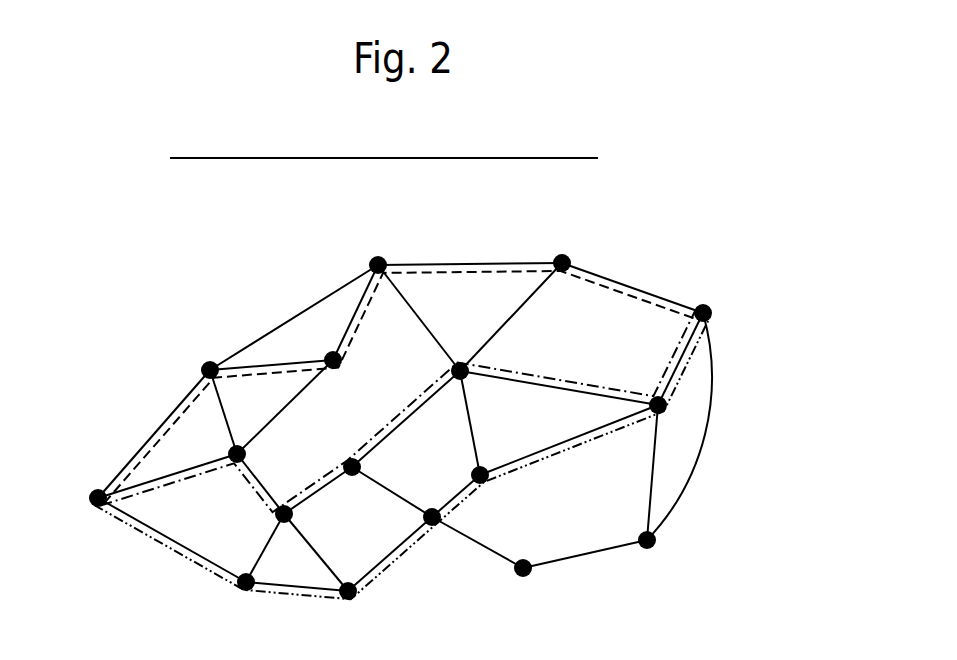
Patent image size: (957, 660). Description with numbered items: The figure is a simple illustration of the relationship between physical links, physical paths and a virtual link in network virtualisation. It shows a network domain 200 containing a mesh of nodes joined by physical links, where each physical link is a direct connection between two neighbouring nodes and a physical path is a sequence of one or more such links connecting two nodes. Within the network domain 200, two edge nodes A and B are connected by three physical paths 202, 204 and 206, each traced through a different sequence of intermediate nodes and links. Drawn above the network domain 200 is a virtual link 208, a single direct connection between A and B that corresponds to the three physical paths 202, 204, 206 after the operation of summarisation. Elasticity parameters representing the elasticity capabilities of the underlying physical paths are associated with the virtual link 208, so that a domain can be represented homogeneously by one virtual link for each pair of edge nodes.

The network domain 200 is at (399, 418).
The physical path 202 is at (449, 272).
The physical path 204 is at (567, 378).
The physical path 206 is at (548, 462).
The virtual link 208 is at (292, 158).